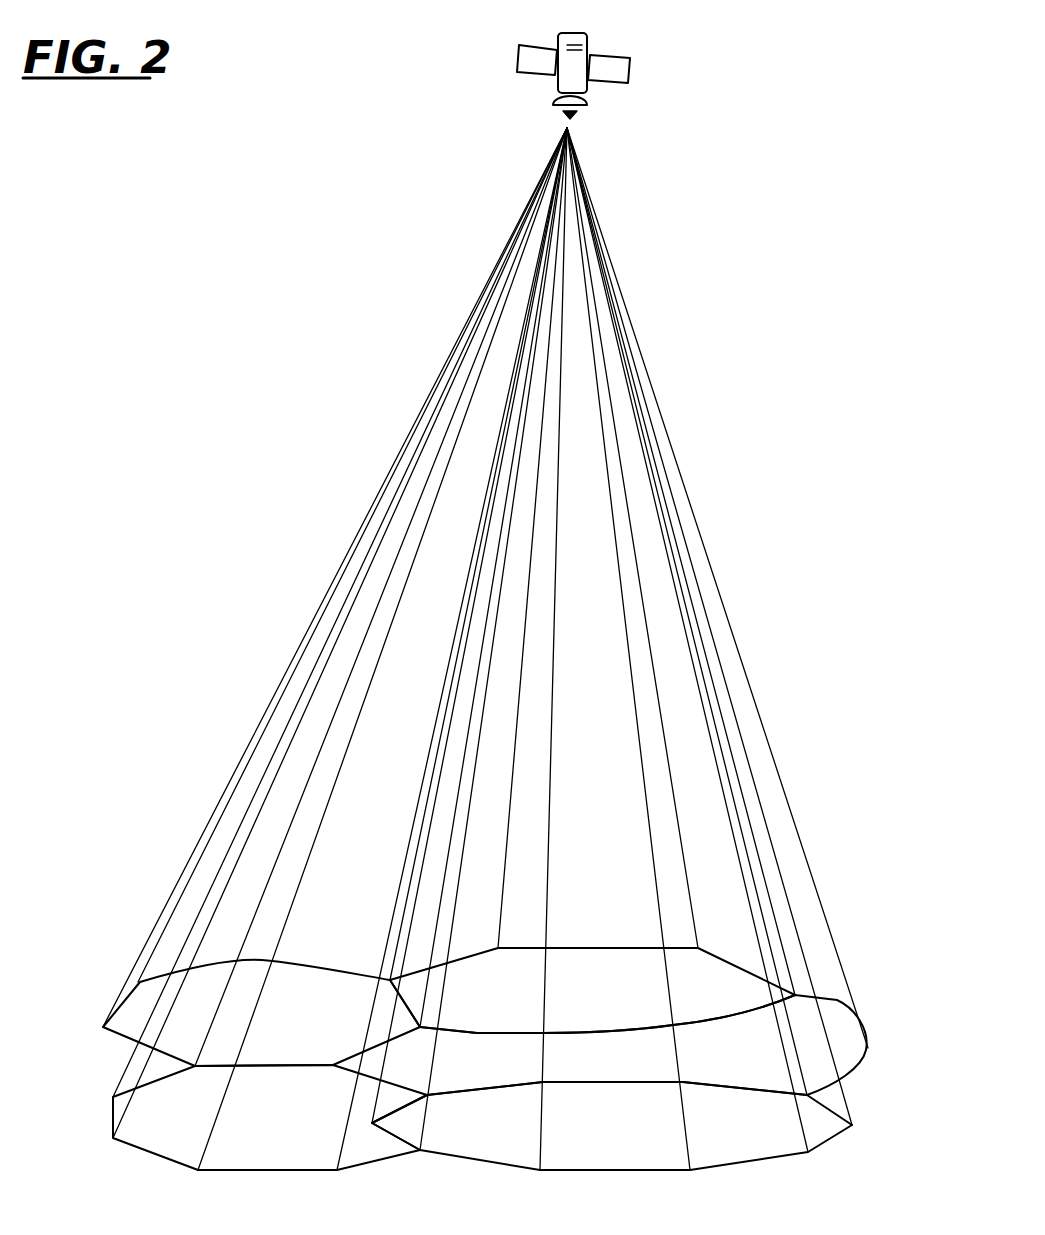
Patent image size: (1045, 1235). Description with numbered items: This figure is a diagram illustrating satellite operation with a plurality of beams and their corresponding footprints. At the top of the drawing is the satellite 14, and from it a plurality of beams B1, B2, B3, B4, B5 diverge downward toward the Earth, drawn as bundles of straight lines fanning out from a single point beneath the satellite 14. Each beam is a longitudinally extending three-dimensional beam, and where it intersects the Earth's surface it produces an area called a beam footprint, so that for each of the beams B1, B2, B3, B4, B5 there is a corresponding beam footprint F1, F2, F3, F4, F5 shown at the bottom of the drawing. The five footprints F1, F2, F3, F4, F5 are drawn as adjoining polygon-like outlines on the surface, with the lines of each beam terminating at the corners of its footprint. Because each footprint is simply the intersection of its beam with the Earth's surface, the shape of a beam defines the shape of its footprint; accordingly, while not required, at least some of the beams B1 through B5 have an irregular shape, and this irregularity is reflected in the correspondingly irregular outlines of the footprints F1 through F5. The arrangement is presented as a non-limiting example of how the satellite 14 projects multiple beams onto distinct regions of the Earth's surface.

The satellite 14 is at (492, 47).
The beam B1 is at (680, 822).
The beam B2 is at (840, 960).
The beam B3 is at (847, 1094).
The beam B4 is at (125, 1073).
The beam B5 is at (170, 903).
The beam footprint F1 is at (737, 963).
The beam footprint F2 is at (838, 1002).
The beam footprint F3 is at (765, 1160).
The beam footprint F4 is at (113, 1113).
The beam footprint F5 is at (138, 985).